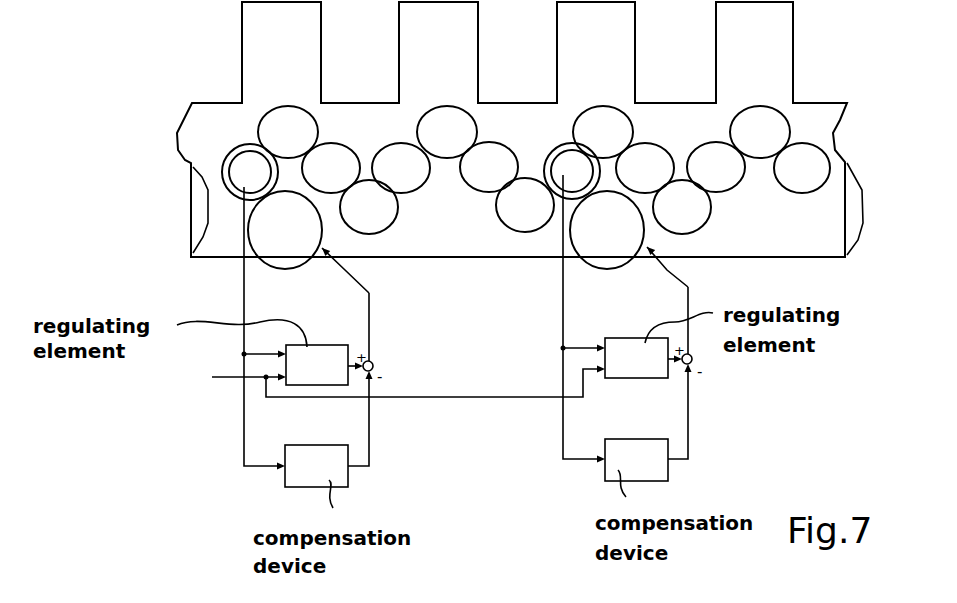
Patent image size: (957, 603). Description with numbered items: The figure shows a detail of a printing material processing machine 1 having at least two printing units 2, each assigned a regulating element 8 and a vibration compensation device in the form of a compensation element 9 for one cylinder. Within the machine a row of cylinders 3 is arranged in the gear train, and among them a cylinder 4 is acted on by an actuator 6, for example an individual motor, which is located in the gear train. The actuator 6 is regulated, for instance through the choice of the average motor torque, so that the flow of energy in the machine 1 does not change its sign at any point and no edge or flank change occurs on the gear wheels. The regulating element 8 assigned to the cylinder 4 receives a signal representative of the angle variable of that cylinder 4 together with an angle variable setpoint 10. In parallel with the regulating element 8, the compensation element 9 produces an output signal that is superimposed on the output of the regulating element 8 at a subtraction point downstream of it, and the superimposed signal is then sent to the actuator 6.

The printing material processing machine 1 is at (520, 129).
The printing unit 2 is at (517, 51).
The cylinder 3 is at (544, 170).
The first cylinder 4 is at (411, 171).
The first actuator 6 is at (446, 230).
The regulating element 8 is at (477, 361).
The compensation device 9 is at (476, 463).
The angle variable setpoint 10 is at (234, 378).